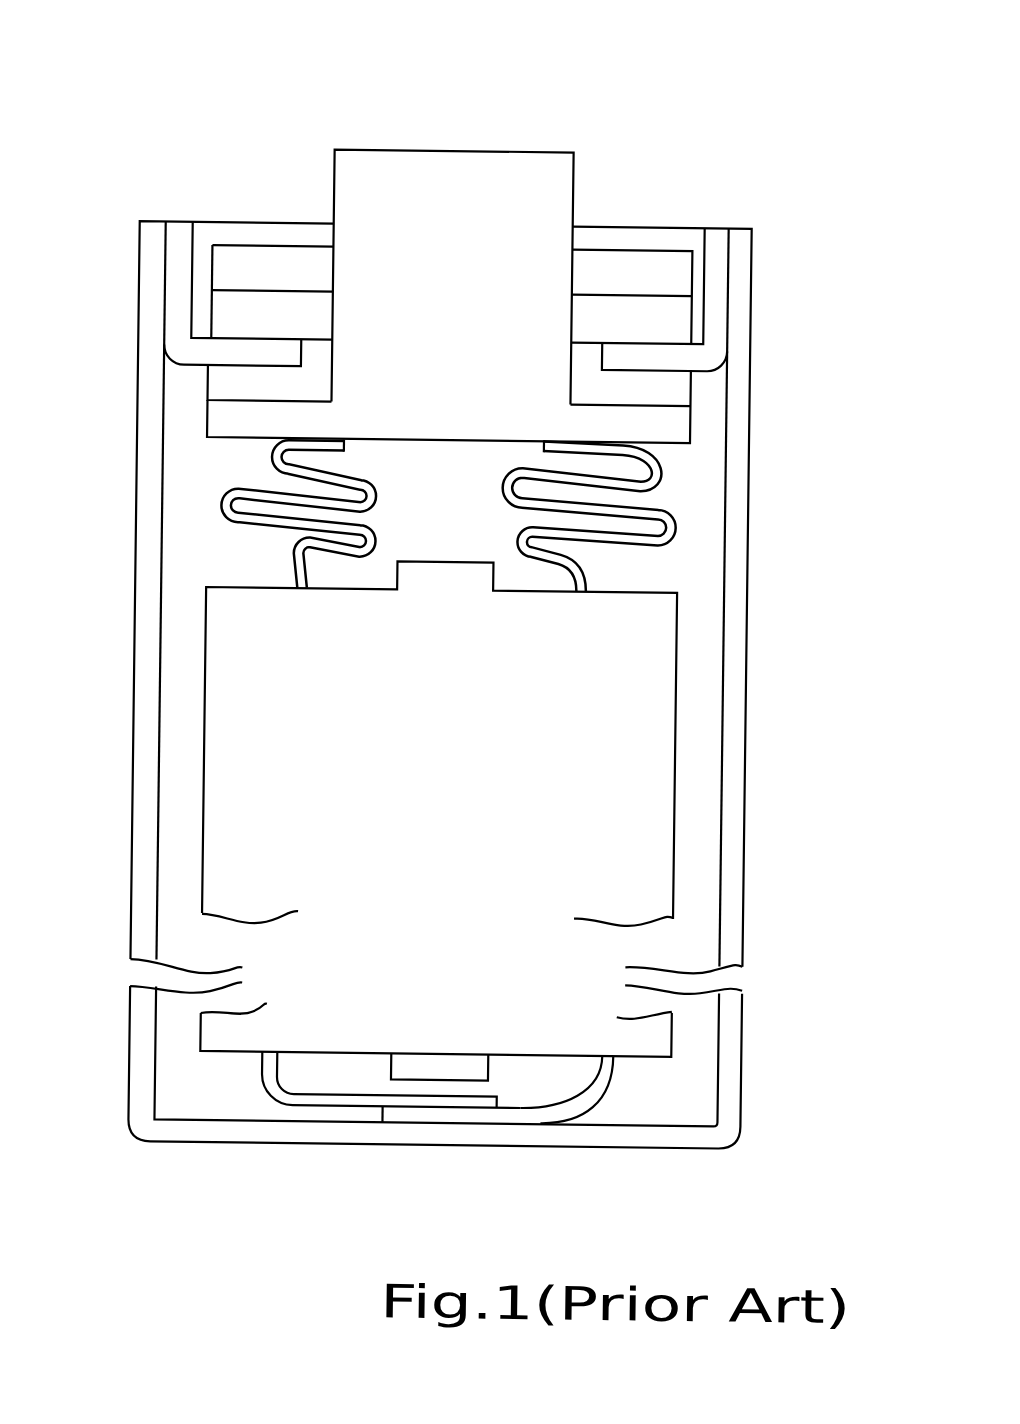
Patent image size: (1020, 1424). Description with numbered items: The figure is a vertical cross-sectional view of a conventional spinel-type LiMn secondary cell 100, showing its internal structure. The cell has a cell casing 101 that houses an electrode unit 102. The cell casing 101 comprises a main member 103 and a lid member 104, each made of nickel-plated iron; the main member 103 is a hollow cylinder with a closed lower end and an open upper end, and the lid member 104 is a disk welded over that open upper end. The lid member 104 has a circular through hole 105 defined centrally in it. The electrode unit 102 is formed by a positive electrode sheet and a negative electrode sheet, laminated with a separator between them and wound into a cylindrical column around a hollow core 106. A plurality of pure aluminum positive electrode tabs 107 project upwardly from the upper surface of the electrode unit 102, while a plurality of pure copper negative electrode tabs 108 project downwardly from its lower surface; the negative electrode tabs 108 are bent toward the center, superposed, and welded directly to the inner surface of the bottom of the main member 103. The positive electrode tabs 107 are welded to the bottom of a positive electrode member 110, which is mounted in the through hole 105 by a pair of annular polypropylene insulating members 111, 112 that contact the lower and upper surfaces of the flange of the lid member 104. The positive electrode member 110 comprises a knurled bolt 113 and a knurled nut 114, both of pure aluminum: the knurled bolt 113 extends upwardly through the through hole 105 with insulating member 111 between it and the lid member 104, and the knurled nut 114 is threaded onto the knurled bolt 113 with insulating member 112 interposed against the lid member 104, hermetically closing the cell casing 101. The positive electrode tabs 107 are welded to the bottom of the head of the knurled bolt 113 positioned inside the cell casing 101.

The spinel-type LiMn secondary cell 100 is at (700, 65).
The cell casing 101 is at (840, 158).
The electrode unit 102 is at (677, 755).
The main member 103 is at (741, 246).
The lid member 104 is at (713, 233).
The circular through hole 105 is at (297, 357).
The hollow core 106 is at (494, 1062).
The positive electrode tabs 107 is at (659, 539).
The negative electrode tabs 108 is at (298, 1099).
The positive electrode member 110 is at (842, 340).
The insulating member 111 is at (207, 388).
The insulating member 112 is at (208, 315).
The knurled bolt 113 is at (681, 422).
The knurled nut 114 is at (676, 280).